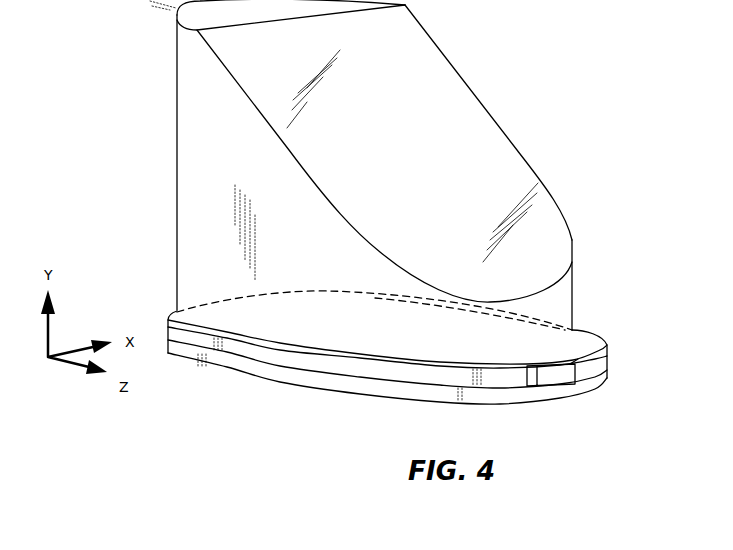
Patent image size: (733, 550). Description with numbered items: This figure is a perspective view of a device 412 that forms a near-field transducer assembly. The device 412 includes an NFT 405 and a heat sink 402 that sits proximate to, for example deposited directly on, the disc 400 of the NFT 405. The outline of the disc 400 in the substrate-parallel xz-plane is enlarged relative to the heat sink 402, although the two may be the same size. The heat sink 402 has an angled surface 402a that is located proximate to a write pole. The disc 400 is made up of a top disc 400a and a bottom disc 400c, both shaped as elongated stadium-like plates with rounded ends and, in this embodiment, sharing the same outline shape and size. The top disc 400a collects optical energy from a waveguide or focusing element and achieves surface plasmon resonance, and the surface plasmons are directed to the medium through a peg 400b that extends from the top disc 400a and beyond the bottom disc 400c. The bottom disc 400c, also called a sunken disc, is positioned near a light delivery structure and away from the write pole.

The device 412 is at (646, 160).
The heat sink 402 is at (493, 120).
The angled surface 402a is at (438, 75).
The NFT 405 is at (618, 327).
The disc 400 is at (295, 386).
The top disc 400a is at (200, 345).
The peg 400b is at (553, 380).
The bottom disc 400c is at (257, 374).